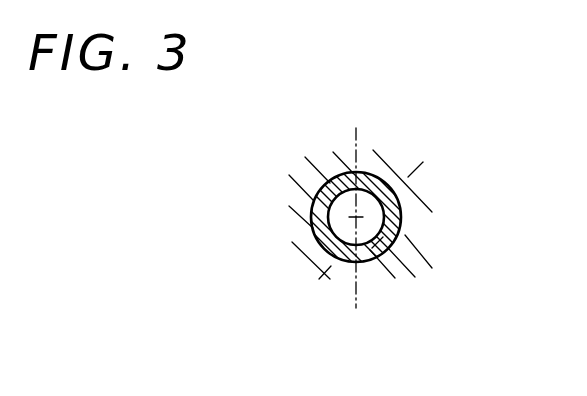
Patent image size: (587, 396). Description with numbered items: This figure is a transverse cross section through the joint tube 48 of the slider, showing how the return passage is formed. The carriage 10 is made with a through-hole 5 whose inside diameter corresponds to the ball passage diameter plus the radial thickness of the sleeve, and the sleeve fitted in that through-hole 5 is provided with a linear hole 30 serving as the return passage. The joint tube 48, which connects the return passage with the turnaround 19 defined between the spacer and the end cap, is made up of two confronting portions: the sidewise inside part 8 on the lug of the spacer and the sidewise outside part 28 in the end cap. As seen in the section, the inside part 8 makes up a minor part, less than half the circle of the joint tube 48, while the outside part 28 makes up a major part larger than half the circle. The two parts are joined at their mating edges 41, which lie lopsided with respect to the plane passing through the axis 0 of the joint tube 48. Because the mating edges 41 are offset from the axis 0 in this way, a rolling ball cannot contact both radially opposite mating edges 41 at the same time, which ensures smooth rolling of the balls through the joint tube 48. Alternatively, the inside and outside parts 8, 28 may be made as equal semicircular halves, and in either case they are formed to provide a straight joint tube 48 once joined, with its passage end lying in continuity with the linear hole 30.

The through-hole 5 is at (333, 183).
The inside part 8 is at (328, 229).
The mating edges 41 is at (352, 180).
The axis 0 is at (355, 217).
The joint tube 48 is at (395, 168).
The carriage 10 is at (408, 176).
The linear hole 30 is at (327, 260).
The turnaround 19 is at (362, 229).
The outside part 28 is at (388, 242).